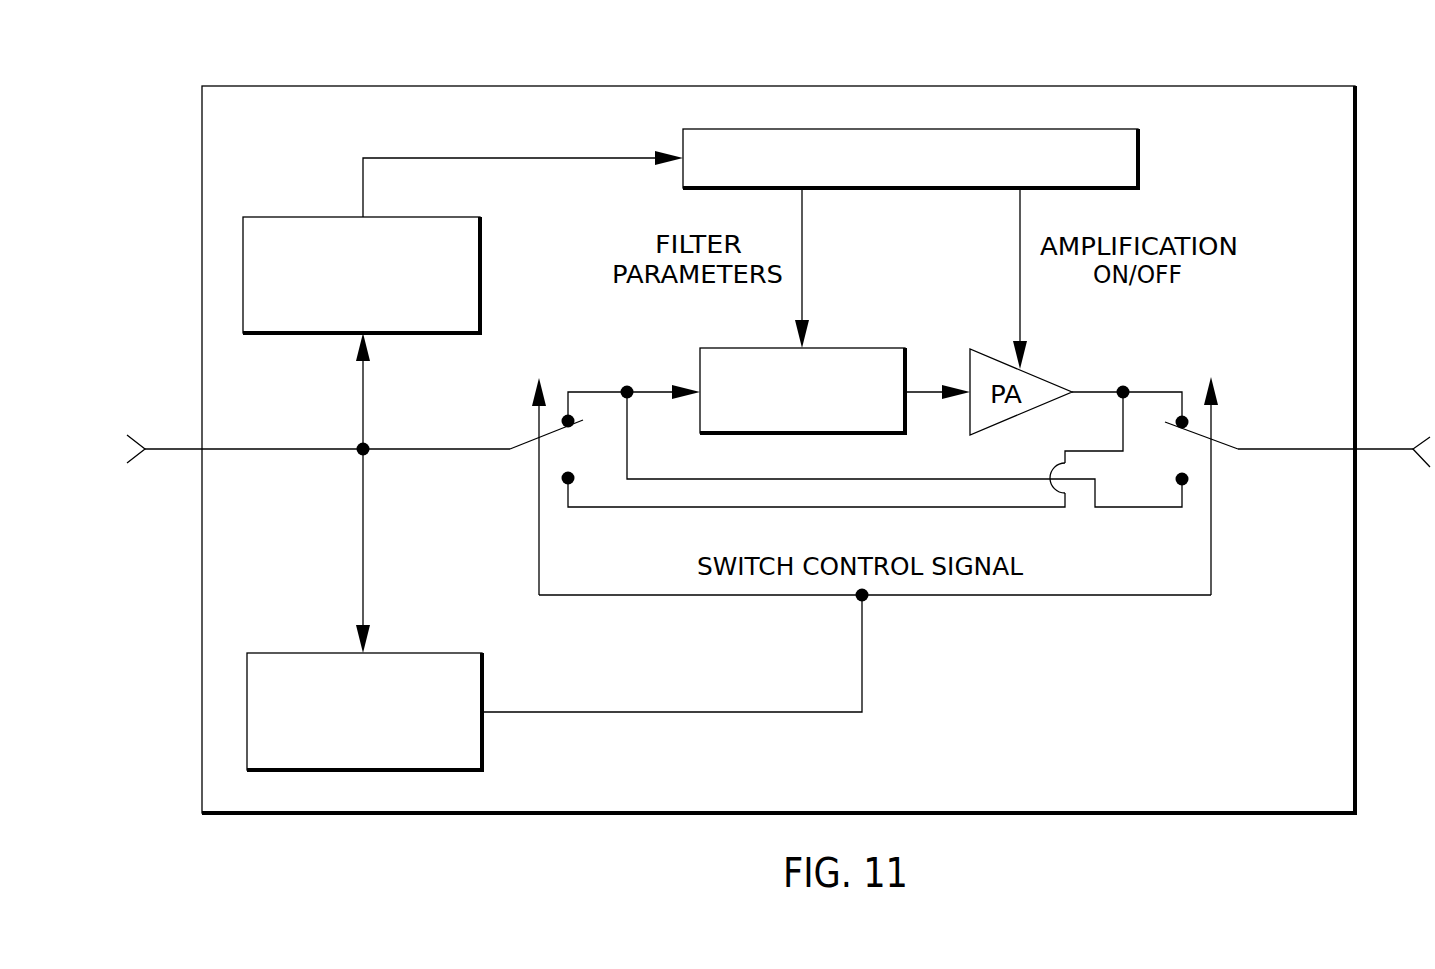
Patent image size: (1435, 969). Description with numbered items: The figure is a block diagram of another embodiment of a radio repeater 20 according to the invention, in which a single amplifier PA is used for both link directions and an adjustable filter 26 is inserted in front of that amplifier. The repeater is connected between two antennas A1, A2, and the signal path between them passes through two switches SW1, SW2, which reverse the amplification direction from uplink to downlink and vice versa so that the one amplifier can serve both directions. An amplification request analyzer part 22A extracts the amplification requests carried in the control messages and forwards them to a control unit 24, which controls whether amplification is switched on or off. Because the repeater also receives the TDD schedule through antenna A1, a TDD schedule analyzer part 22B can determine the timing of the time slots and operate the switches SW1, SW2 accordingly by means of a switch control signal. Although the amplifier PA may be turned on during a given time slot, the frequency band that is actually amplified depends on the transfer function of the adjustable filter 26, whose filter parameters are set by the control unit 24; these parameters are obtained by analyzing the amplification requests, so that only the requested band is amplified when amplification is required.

The RF front-end module 20 is at (1357, 100).
The amplification request analyzer part 22A is at (480, 232).
The TDD schedule analyzer part 22B is at (482, 668).
The control unit 24 is at (1138, 146).
The adjustable filter 26 is at (888, 348).
The switch SW1 is at (527, 440).
The switch SW2 is at (1222, 442).
The antenna A1 is at (157, 440).
The antenna A2 is at (1398, 446).